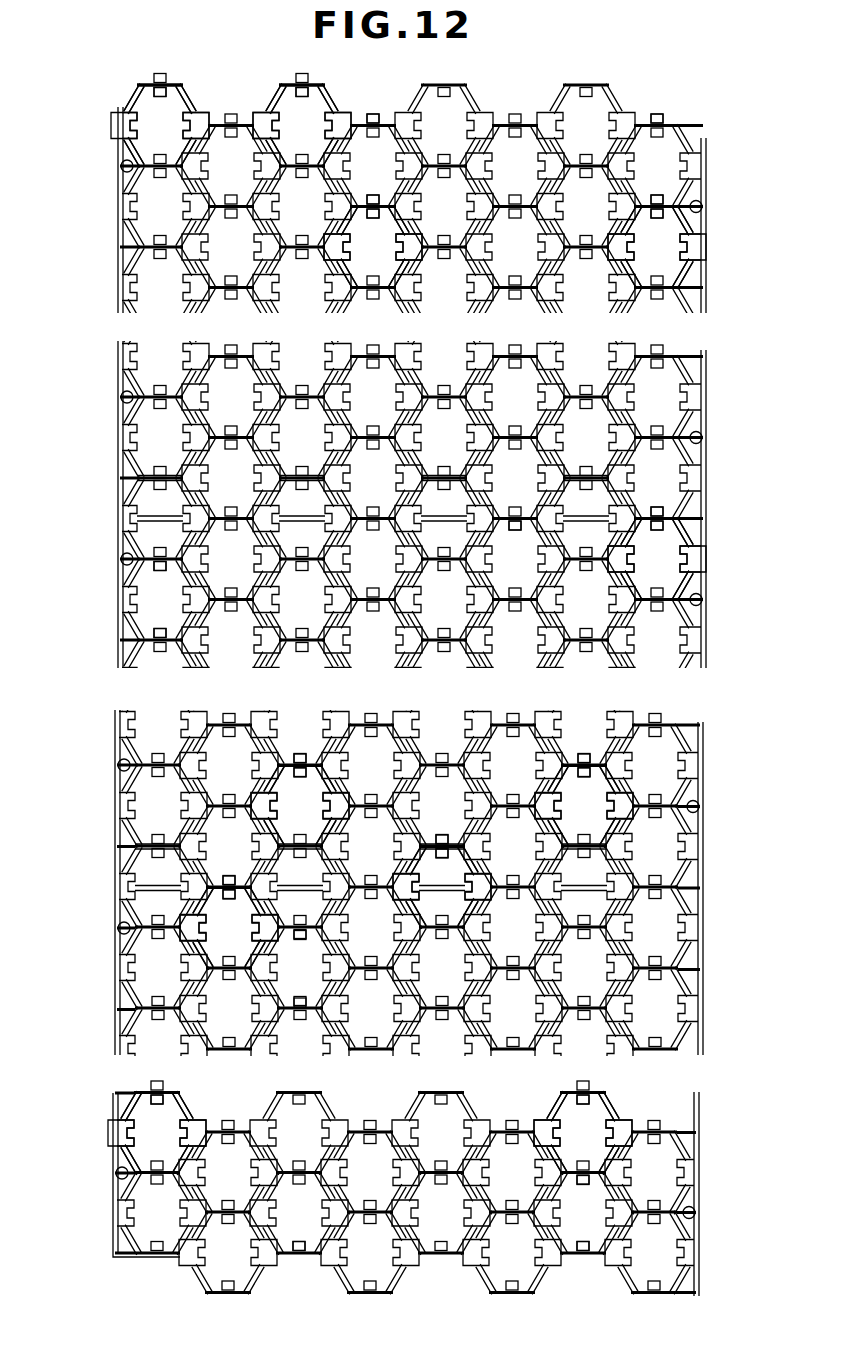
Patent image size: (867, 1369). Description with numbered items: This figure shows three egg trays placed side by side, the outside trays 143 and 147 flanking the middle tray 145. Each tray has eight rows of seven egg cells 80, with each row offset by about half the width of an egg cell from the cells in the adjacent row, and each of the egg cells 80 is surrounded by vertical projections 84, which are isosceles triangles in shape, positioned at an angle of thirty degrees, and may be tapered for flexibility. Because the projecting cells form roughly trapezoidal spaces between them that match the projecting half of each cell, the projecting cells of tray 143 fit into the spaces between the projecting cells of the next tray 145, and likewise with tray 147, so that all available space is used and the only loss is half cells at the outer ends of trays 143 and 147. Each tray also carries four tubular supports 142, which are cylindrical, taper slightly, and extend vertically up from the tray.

The egg cell 80 is at (173, 129).
The projection 84 is at (376, 104).
The tubular support 142 is at (120, 166).
The tray 143 is at (412, 332).
The tray 145 is at (408, 695).
The tray 147 is at (432, 1081).